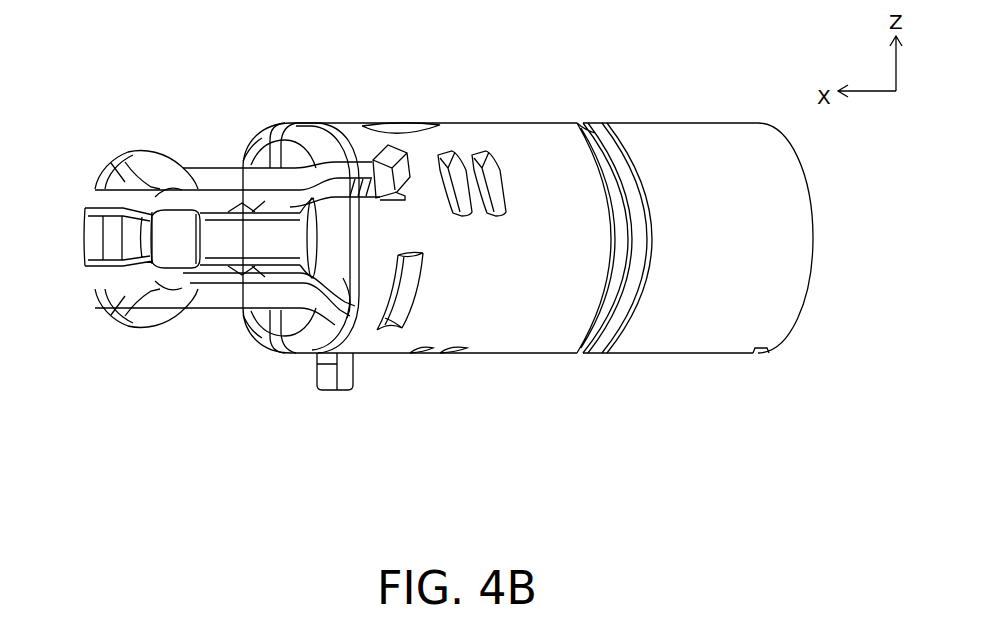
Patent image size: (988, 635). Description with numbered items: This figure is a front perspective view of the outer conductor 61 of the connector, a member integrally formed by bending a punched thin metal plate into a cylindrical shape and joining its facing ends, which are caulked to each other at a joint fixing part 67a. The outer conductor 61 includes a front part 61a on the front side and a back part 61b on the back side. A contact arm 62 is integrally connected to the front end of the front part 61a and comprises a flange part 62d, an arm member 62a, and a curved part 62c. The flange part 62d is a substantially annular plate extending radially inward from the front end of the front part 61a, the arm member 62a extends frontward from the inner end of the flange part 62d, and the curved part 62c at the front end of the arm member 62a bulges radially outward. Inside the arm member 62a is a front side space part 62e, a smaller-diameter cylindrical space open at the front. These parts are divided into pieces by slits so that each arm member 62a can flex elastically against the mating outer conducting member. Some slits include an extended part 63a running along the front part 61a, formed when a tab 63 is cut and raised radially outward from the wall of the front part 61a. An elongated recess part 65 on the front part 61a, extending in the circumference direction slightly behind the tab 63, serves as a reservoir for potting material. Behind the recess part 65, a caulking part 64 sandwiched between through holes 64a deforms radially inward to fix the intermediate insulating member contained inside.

The outer conductor 61 is at (613, 353).
The front part 61a is at (515, 353).
The back part 61b is at (690, 353).
The contact arm 62 is at (215, 313).
The arm member 62a is at (213, 180).
The curved part 62c is at (163, 160).
The flange part 62d is at (303, 150).
The front side space part 62e is at (130, 240).
The tab 63 is at (325, 390).
The extended part 63a is at (350, 183).
The caulking part 64 is at (467, 170).
The through hole 64a is at (487, 165).
The recess part 65 is at (387, 330).
The joint fixing part 67a is at (395, 130).